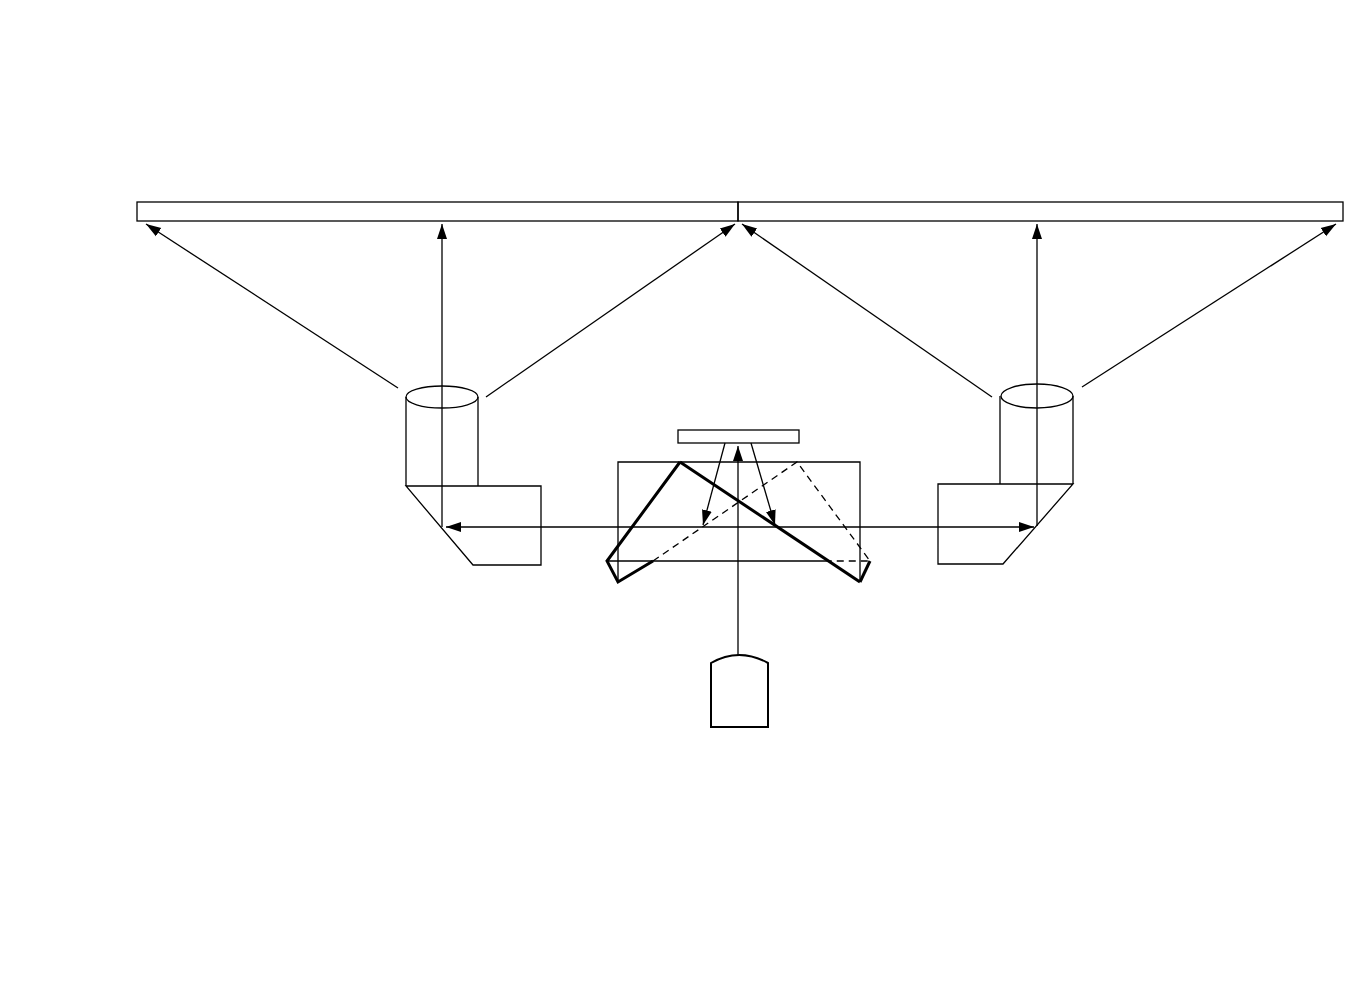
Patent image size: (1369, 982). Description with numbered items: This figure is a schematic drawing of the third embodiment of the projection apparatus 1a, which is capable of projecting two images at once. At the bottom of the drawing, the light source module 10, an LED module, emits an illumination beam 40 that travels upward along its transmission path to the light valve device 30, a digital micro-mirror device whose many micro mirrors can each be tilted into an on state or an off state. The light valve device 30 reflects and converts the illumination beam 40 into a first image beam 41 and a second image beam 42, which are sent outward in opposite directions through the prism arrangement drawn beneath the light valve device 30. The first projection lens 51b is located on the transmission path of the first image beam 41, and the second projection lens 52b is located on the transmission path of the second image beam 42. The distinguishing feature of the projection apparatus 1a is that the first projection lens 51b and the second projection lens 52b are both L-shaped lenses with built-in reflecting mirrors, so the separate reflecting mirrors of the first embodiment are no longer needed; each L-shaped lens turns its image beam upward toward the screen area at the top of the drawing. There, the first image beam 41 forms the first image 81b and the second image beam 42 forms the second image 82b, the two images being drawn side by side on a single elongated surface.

The projection apparatus 1a is at (1262, 140).
The light source module 10 is at (752, 707).
The light valve device 30 is at (778, 430).
The illumination beam 40 is at (740, 620).
The first image beam 41 is at (1037, 292).
The second image beam 42 is at (442, 292).
The first projection lens 51b is at (1073, 442).
The second projection lens 52b is at (406, 444).
The first image 81b is at (975, 202).
The second image 82b is at (503, 202).